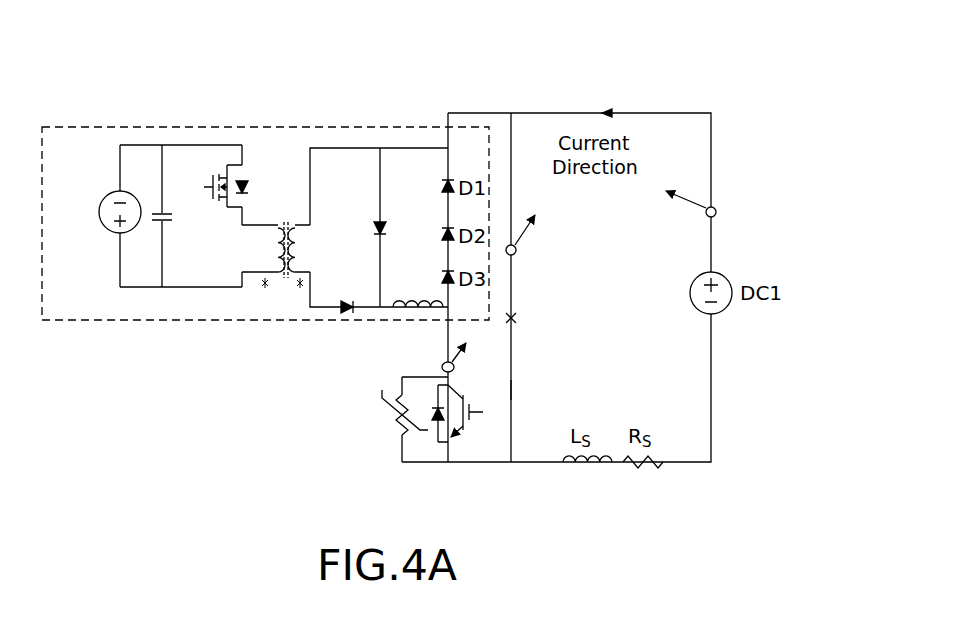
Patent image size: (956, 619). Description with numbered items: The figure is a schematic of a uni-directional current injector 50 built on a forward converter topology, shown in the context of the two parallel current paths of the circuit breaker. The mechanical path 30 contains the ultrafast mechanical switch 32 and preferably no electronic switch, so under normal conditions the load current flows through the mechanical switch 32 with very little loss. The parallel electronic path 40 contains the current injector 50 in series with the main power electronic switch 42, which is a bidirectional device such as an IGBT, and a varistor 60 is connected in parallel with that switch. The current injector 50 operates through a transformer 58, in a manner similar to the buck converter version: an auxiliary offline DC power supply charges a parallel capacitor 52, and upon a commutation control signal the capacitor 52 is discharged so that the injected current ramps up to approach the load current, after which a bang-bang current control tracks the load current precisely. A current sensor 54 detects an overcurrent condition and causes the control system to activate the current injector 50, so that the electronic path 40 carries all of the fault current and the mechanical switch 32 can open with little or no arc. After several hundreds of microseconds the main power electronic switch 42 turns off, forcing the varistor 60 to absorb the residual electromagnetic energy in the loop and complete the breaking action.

The current injector 50 is at (223, 108).
The transformer 58 is at (278, 325).
The electronic path 40 is at (448, 345).
The capacitor 52 is at (517, 252).
The ultrafast mechanical switch 32 is at (493, 313).
The current sensor 54 is at (716, 212).
The mechanical path 30 is at (511, 390).
The varistor 60 is at (408, 433).
The main power electronic switch 42 is at (462, 455).